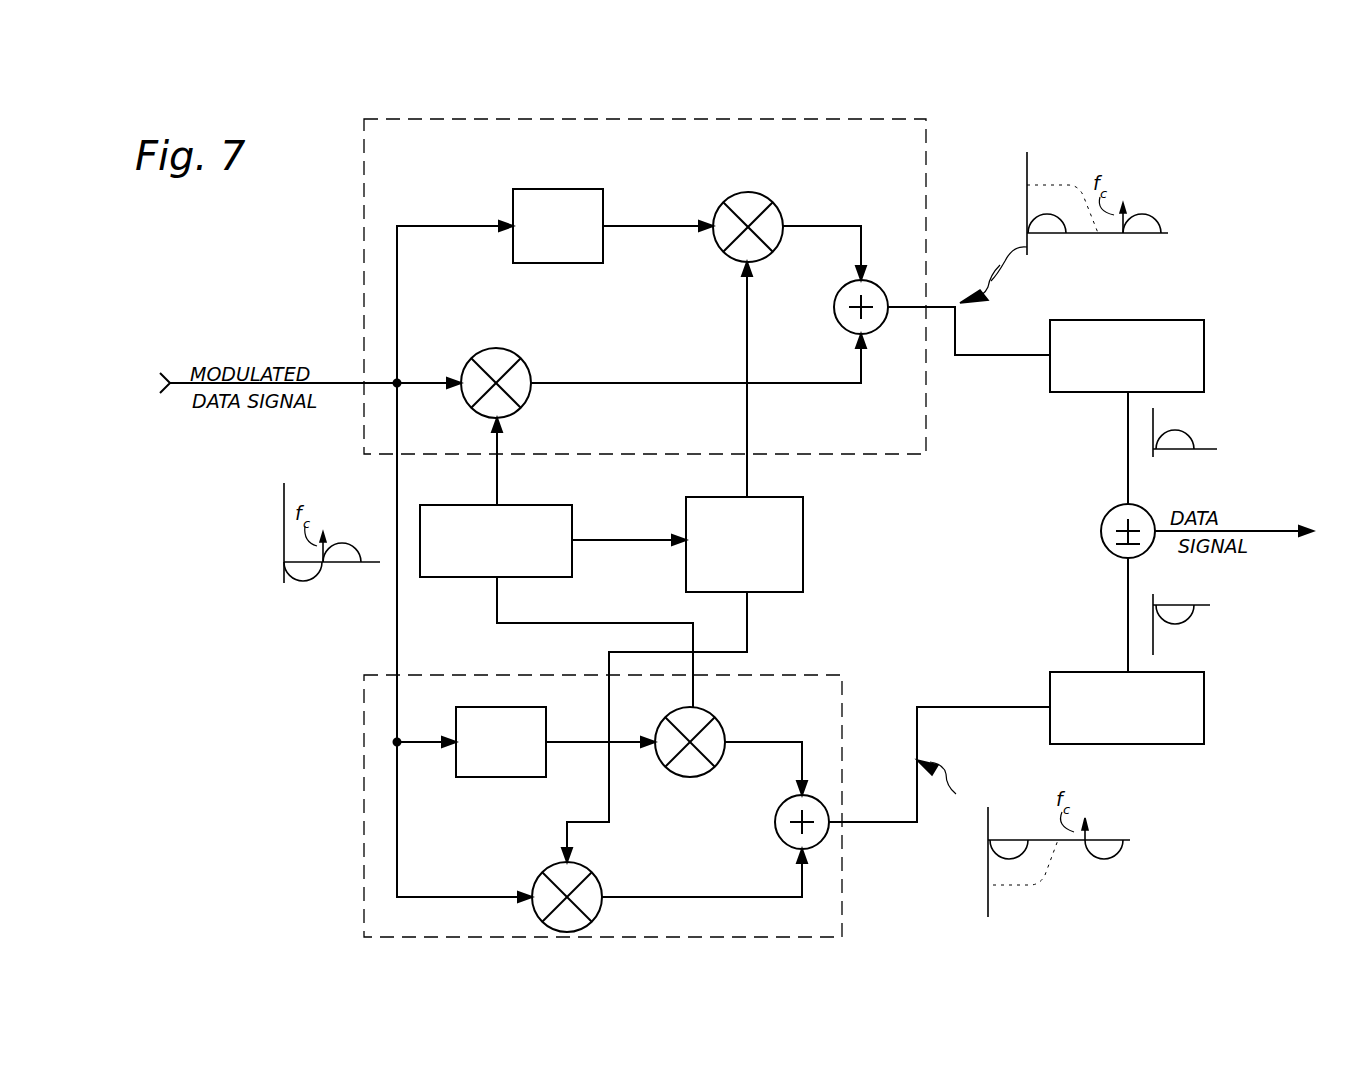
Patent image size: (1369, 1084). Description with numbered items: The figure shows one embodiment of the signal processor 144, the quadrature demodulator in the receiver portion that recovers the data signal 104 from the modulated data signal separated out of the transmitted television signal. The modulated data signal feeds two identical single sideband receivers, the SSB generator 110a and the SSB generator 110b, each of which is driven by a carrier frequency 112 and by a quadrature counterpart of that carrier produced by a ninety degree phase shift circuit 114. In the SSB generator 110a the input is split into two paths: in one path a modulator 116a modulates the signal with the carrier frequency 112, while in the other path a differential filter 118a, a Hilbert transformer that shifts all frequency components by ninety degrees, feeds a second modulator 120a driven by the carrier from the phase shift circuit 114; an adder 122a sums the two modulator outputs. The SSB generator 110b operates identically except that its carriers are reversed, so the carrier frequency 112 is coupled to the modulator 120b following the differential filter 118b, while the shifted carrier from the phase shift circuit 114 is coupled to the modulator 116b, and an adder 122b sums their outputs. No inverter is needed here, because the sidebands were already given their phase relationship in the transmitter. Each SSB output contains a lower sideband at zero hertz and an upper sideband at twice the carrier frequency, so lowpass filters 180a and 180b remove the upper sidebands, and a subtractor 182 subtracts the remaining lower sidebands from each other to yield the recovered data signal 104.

The data signal 104 is at (1268, 533).
The single sideband (SSB) generator 110a is at (364, 218).
The single sideband (SSB) generator 110b is at (364, 842).
The carrier frequency 112 is at (480, 577).
The 90° phase shift circuit 114 is at (803, 550).
The modulator 116a is at (498, 352).
The modulator 116b is at (600, 885).
The differential filter 118a is at (578, 188).
The differential filter 118b is at (485, 777).
The modulator 120a is at (754, 192).
The modulator 120b is at (716, 767).
The adder 122a is at (880, 327).
The adder 122b is at (778, 838).
The signal processor 144 is at (240, 772).
The lowpass filter 180a is at (1075, 392).
The lowpass filter 180b is at (1073, 672).
The subtractor 182 is at (1102, 517).